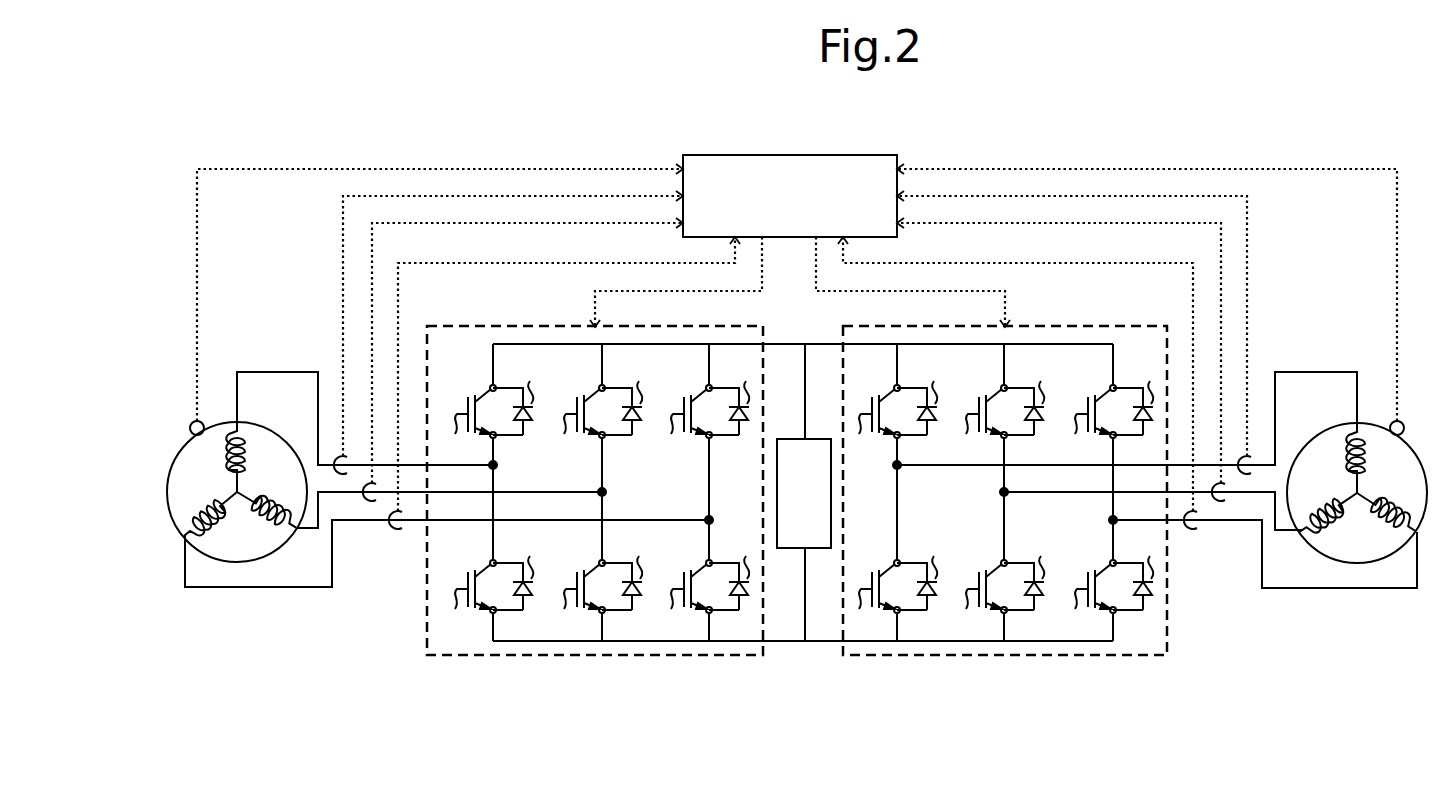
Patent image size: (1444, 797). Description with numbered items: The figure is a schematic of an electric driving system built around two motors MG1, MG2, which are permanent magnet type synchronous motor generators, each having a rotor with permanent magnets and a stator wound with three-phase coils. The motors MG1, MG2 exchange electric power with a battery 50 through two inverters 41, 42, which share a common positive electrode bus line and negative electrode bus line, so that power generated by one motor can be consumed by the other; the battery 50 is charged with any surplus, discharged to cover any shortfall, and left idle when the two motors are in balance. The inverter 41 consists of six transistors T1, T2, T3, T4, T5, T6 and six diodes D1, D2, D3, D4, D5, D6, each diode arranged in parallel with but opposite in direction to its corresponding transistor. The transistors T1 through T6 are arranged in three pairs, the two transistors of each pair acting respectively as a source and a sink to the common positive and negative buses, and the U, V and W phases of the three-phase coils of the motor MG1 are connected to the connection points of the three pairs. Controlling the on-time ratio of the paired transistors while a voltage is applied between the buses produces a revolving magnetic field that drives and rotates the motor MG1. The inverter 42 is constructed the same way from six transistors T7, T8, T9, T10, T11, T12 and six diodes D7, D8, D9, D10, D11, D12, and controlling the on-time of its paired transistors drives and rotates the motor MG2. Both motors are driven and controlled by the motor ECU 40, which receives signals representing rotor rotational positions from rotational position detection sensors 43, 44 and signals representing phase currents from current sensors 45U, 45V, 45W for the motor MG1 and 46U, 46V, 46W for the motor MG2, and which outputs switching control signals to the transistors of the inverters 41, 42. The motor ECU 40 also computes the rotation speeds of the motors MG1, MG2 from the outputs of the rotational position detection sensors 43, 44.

The motor electronic control unit 40 is at (790, 155).
The inverter 41 is at (986, 517).
The inverter 42 is at (616, 517).
The rotational position detection sensor 43 is at (1402, 421).
The rotational position detection sensor 44 is at (193, 422).
The current sensor 45U is at (1247, 474).
The current sensor 45V is at (1221, 501).
The current sensor 45W is at (1193, 529).
The current sensor 46U is at (343, 474).
The current sensor 46V is at (372, 501).
The current sensor 46W is at (398, 529).
The battery 50 is at (831, 548).
The motor MG1 is at (1316, 434).
The motor MG2 is at (278, 434).
The transistor T1 is at (874, 422).
The transistor T2 is at (983, 422).
The transistor T3 is at (1090, 422).
The transistor T4 is at (874, 597).
The transistor T5 is at (983, 597).
The transistor T6 is at (1090, 597).
The transistor T7 is at (470, 422).
The transistor T8 is at (579, 422).
The transistor T9 is at (687, 422).
The transistor T10 is at (469, 597).
The transistor T11 is at (576, 597).
The transistor T12 is at (683, 597).
The diode D1 is at (922, 397).
The diode D2 is at (1030, 397).
The diode D3 is at (1136, 397).
The diode D4 is at (923, 572).
The diode D5 is at (1030, 572).
The diode D6 is at (1137, 572).
The diode D7 is at (518, 397).
The diode D8 is at (627, 397).
The diode D9 is at (729, 397).
The diode D10 is at (522, 572).
The diode D11 is at (630, 572).
The diode D12 is at (733, 572).